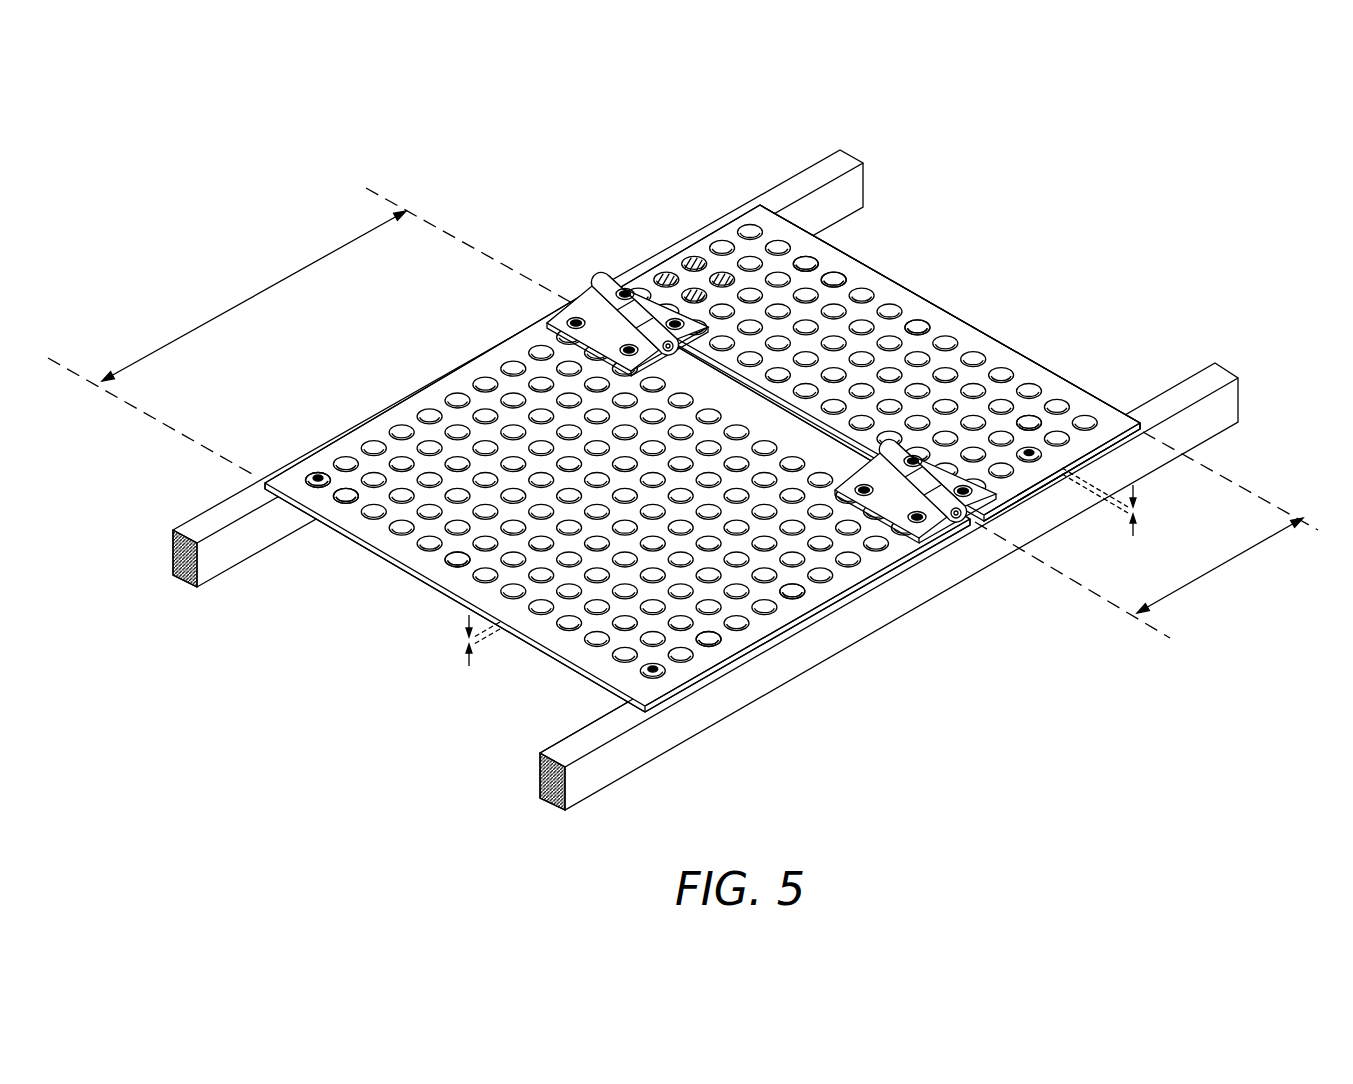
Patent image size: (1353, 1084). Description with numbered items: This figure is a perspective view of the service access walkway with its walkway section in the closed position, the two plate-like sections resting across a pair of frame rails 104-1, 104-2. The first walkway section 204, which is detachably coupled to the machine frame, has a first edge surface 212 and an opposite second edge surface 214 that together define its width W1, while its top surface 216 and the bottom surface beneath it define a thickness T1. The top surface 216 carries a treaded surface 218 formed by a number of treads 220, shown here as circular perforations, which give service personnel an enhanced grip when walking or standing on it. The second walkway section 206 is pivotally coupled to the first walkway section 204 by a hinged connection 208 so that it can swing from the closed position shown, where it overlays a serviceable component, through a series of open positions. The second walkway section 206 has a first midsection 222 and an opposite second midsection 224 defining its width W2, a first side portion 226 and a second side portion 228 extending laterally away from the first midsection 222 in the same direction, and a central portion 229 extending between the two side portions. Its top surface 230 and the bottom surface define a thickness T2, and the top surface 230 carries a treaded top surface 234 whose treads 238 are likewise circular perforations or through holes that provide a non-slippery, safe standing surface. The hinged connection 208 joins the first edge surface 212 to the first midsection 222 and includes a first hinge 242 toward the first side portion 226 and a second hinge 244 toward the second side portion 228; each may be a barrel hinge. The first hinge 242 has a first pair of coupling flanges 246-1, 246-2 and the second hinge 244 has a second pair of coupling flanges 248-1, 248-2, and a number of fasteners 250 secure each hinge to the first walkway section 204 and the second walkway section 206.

The first support rail 104-1 is at (800, 182).
The second support rail 104-2 is at (1193, 382).
The first walkway section 204 is at (540, 646).
The second walkway section 206 is at (1012, 358).
The hinged connection 208 is at (636, 281).
The first edge surface 212 is at (986, 530).
The second edge surface 214 is at (637, 705).
The top surface 216 is at (460, 566).
The treaded surface 218 is at (370, 490).
The treads 220 is at (796, 602).
The first midsection 222 is at (880, 535).
The second midsection 224 is at (960, 316).
The first side portion 226 is at (691, 253).
The second side portion 228 is at (1143, 432).
The central portion 229 is at (810, 258).
The top surface 230 is at (918, 308).
The treaded surface 234 is at (1021, 414).
The treads 238 is at (836, 276).
The first hinge 242 is at (613, 315).
The second hinge 244 is at (964, 528).
The first pair of coupling flanges 246-1 is at (565, 337).
The first pair of coupling flanges 246-2 is at (600, 290).
The second pair of coupling flanges 248-1 is at (937, 510).
The second pair of coupling flanges 248-2 is at (992, 506).
The fasteners 250 is at (576, 320).
The width of first plate W1 is at (311, 331).
The width W2 is at (1146, 535).
The thickness T1 is at (462, 670).
The thickness T2 is at (1137, 514).